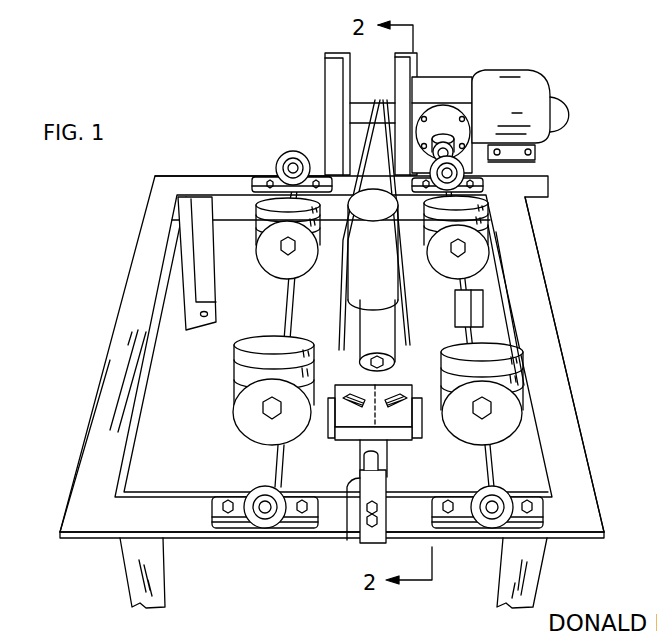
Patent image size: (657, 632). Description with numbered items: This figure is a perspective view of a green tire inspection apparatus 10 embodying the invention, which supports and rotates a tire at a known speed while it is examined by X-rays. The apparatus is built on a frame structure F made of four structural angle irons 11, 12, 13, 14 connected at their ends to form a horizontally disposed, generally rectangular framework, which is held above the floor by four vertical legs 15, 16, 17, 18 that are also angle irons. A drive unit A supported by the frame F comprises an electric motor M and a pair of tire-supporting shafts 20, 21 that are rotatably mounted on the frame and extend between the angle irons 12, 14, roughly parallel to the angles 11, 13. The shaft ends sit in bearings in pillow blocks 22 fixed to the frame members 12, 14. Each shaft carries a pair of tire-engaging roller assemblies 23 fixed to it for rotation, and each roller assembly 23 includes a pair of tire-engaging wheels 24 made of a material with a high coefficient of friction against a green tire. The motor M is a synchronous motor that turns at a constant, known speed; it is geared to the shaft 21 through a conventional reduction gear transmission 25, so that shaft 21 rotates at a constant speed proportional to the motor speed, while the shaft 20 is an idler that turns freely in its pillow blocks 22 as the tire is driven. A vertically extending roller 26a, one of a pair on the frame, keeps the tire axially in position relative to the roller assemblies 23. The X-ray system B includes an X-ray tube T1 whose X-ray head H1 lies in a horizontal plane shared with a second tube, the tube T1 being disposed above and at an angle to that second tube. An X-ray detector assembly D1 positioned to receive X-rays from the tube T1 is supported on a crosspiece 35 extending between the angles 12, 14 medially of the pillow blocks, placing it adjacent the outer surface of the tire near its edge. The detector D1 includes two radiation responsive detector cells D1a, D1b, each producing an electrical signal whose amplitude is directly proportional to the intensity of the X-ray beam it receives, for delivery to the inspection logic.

The wire forming machine 10 is at (188, 134).
The structural angle iron 11 is at (127, 320).
The structural angle iron 12 is at (230, 183).
The structural angle iron 13 is at (548, 298).
The structural angle iron 14 is at (190, 525).
The vertical leg 15 is at (133, 572).
The vertical leg 16 is at (212, 287).
The vertical leg 17 is at (492, 288).
The vertical leg 18 is at (533, 570).
The tire-supporting shaft 20 is at (283, 312).
The tire-supporting shaft 21 is at (473, 315).
The pillow block 22 is at (293, 153).
The tire-engaging roller assembly 23 is at (258, 232).
The tire-engaging wheel 24 is at (262, 250).
The reduction gear transmission 25 is at (448, 82).
The vertically extending roller 26a is at (355, 490).
The crosspiece 35 is at (365, 458).
The frame structure F is at (84, 435).
The drive unit A is at (281, 148).
The X-ray system B is at (316, 103).
The electric motor M is at (538, 93).
The X-ray tube T1 is at (360, 275).
The X-ray head H1 is at (367, 322).
The X-ray detector assembly D1 is at (345, 427).
The detector cell D1a is at (345, 388).
The detector cell D1b is at (402, 420).